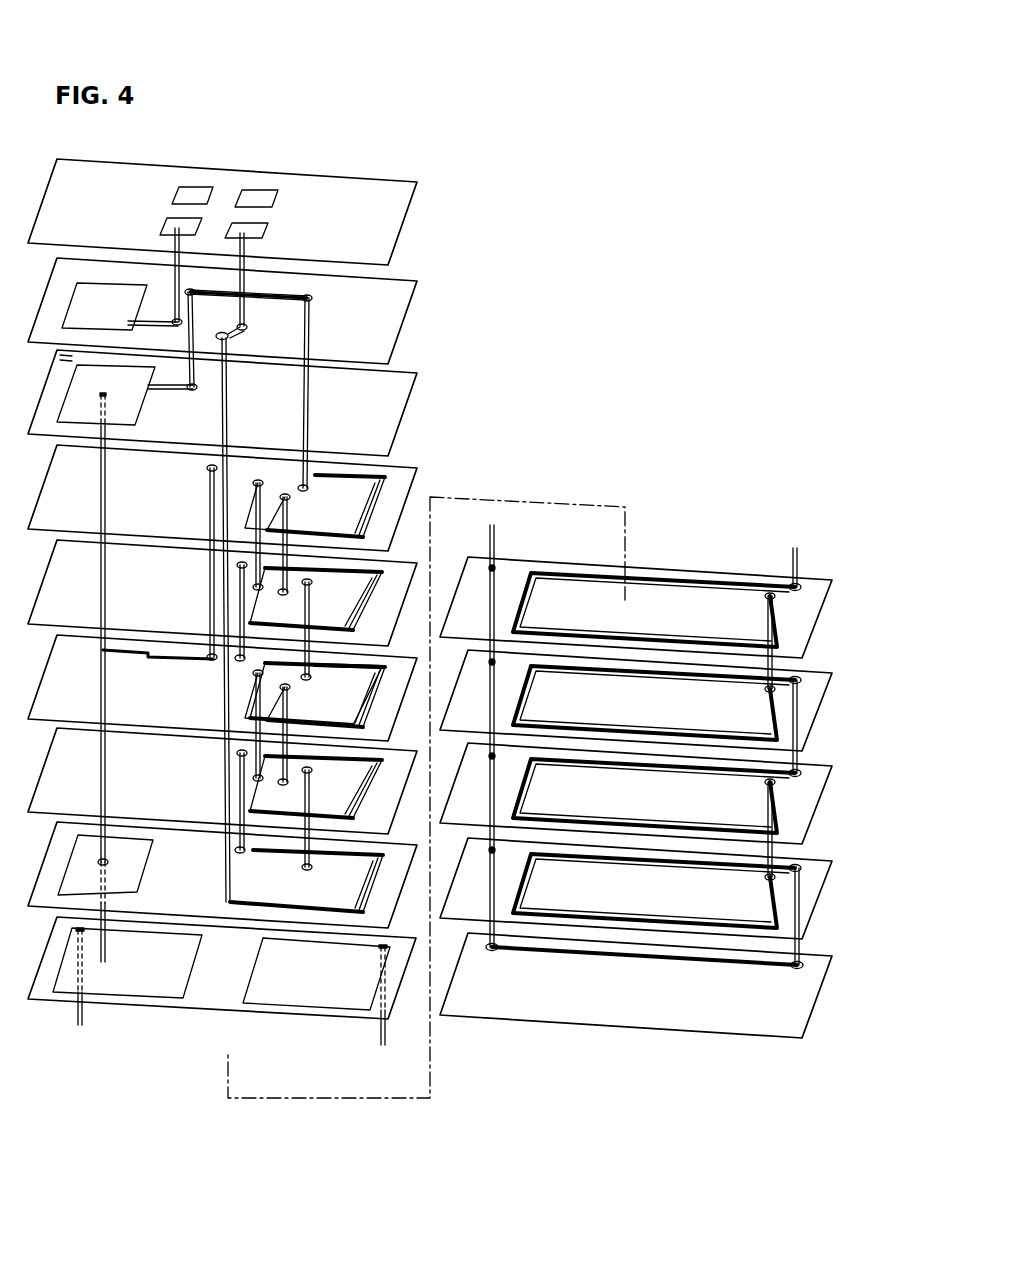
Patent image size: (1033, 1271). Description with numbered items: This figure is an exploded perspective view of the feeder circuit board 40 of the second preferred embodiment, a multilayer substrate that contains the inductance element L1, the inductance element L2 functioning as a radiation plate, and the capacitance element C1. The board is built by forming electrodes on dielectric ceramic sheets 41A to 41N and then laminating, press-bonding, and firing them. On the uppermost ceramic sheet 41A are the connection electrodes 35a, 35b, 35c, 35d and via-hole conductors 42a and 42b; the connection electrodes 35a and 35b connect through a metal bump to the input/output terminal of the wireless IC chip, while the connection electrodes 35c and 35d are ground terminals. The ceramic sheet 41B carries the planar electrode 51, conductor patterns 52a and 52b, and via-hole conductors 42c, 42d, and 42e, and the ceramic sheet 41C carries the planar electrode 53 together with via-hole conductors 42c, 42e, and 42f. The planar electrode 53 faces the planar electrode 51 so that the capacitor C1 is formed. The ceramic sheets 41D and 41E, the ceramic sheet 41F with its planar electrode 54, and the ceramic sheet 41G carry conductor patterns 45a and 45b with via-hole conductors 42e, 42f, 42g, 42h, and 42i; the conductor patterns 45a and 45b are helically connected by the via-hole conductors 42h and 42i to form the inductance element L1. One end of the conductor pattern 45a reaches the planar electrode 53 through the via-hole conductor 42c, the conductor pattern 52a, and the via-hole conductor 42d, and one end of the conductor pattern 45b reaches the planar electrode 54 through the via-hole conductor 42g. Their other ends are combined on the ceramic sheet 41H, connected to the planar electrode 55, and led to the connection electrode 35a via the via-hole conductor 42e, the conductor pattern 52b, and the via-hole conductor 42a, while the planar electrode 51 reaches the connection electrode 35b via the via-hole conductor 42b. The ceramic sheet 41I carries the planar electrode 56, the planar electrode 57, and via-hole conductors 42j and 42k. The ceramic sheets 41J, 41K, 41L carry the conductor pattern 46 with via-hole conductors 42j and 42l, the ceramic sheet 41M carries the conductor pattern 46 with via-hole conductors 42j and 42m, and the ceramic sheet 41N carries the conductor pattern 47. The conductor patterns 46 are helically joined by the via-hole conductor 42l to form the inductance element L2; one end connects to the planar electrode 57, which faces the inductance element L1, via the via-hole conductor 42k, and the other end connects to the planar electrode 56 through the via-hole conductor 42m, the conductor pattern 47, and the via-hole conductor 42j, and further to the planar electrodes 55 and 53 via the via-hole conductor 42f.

The feeder circuit board 40 is at (478, 151).
The ceramic sheet 41A is at (222, 212).
The ceramic sheet 41B is at (222, 311).
The ceramic sheet 41C is at (222, 403).
The ceramic sheet 41D is at (222, 498).
The ceramic sheet 41E is at (222, 593).
The ceramic sheet 41F is at (222, 688).
The ceramic sheet 41G is at (222, 781).
The ceramic sheet 41H is at (222, 875).
The ceramic sheet 41I is at (222, 968).
The ceramic sheet 41J is at (636, 607).
The ceramic sheet 41K is at (636, 700).
The ceramic sheet 41L is at (636, 793).
The ceramic sheet 41M is at (636, 888).
The ceramic sheet 41N is at (636, 985).
The connection electrode 35a is at (270, 232).
The connection electrode 35b is at (158, 228).
The connection electrode 35c is at (257, 190).
The connection electrode 35d is at (190, 186).
The via-hole conductor 42a is at (248, 230).
The via-hole conductor 42b is at (175, 226).
The via-hole conductor 42c is at (312, 300).
The via-hole conductor 42d is at (190, 294).
The via-hole conductor 42e is at (226, 348).
The via-hole conductor 42f is at (108, 396).
The via-hole conductor 42g is at (208, 469).
The via-hole conductor 42h is at (252, 484).
The via-hole conductor 42i is at (290, 497).
The via-hole conductor 42j is at (82, 935).
The via-hole conductor 42k is at (380, 948).
The via-hole conductor 42l is at (765, 596).
The via-hole conductor 42m is at (795, 872).
The conductor pattern 45a is at (398, 470).
The conductor pattern 45b is at (385, 512).
The conductor pattern 46 is at (662, 572).
The conductor pattern 47 is at (728, 967).
The planar electrode 51 is at (112, 297).
The conductor pattern 52a is at (268, 302).
The conductor pattern 52b is at (218, 332).
The planar electrode 53 is at (148, 410).
The planar electrode 54 is at (125, 665).
The planar electrode 55 is at (76, 847).
The planar electrode 56 is at (138, 1000).
The planar electrode 57 is at (320, 1005).
The capacitance element C1 is at (80, 310).
The inductance element L1 is at (409, 464).
The inductance element L2 is at (744, 563).